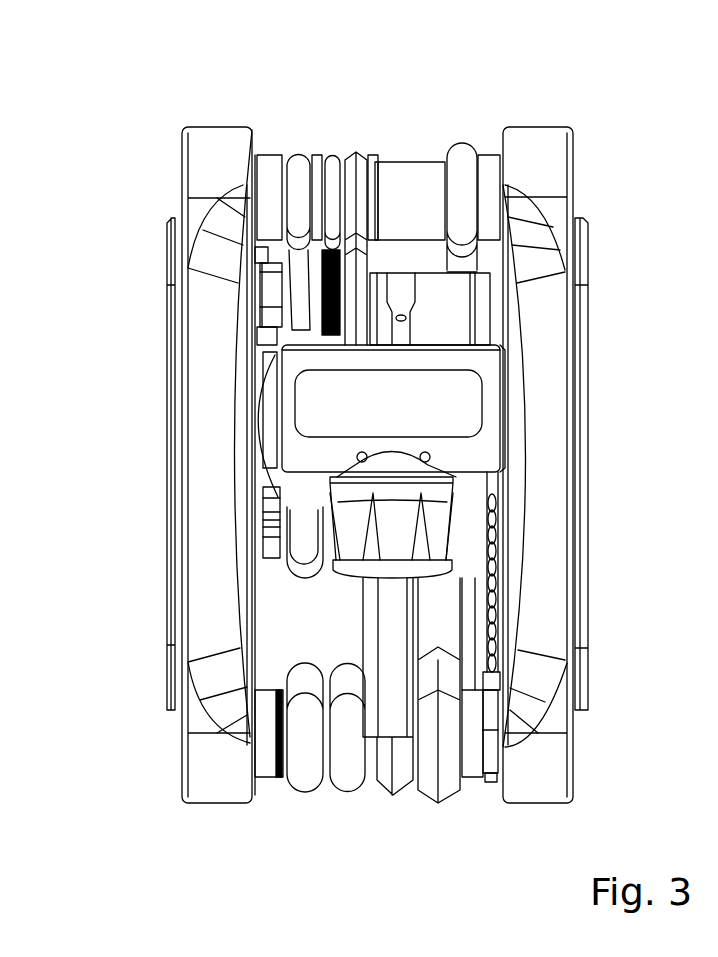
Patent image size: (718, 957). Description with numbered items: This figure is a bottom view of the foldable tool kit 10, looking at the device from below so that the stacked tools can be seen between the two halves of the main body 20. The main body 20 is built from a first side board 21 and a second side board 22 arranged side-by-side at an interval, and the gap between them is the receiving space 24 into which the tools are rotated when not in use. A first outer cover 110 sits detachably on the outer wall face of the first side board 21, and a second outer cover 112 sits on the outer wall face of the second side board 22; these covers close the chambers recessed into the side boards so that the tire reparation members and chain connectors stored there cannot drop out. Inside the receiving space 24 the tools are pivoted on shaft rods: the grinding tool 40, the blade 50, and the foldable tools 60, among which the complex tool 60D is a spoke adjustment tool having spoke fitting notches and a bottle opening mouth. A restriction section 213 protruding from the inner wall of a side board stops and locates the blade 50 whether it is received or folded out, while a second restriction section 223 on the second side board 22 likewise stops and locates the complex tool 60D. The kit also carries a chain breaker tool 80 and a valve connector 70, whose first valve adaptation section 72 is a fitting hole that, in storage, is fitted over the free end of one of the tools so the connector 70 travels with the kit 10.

The foldable tool kit 10 is at (116, 111).
The main body 20 is at (594, 131).
The first side board 21 is at (560, 330).
The second side board 22 is at (205, 162).
The receiving space 24 is at (266, 645).
The grinding tool 40 is at (334, 148).
The blade 50 is at (492, 802).
The foldable tool 60 is at (324, 805).
The complex tool 60D is at (262, 250).
The valve connector 70 is at (308, 399).
The first valve adaptation section 72 is at (355, 548).
The chain breaker tool 80 is at (463, 138).
The first outer cover 110 is at (592, 505).
The second outer cover 112 is at (172, 262).
The restriction section 213 is at (495, 683).
The second restriction section 223 is at (276, 148).